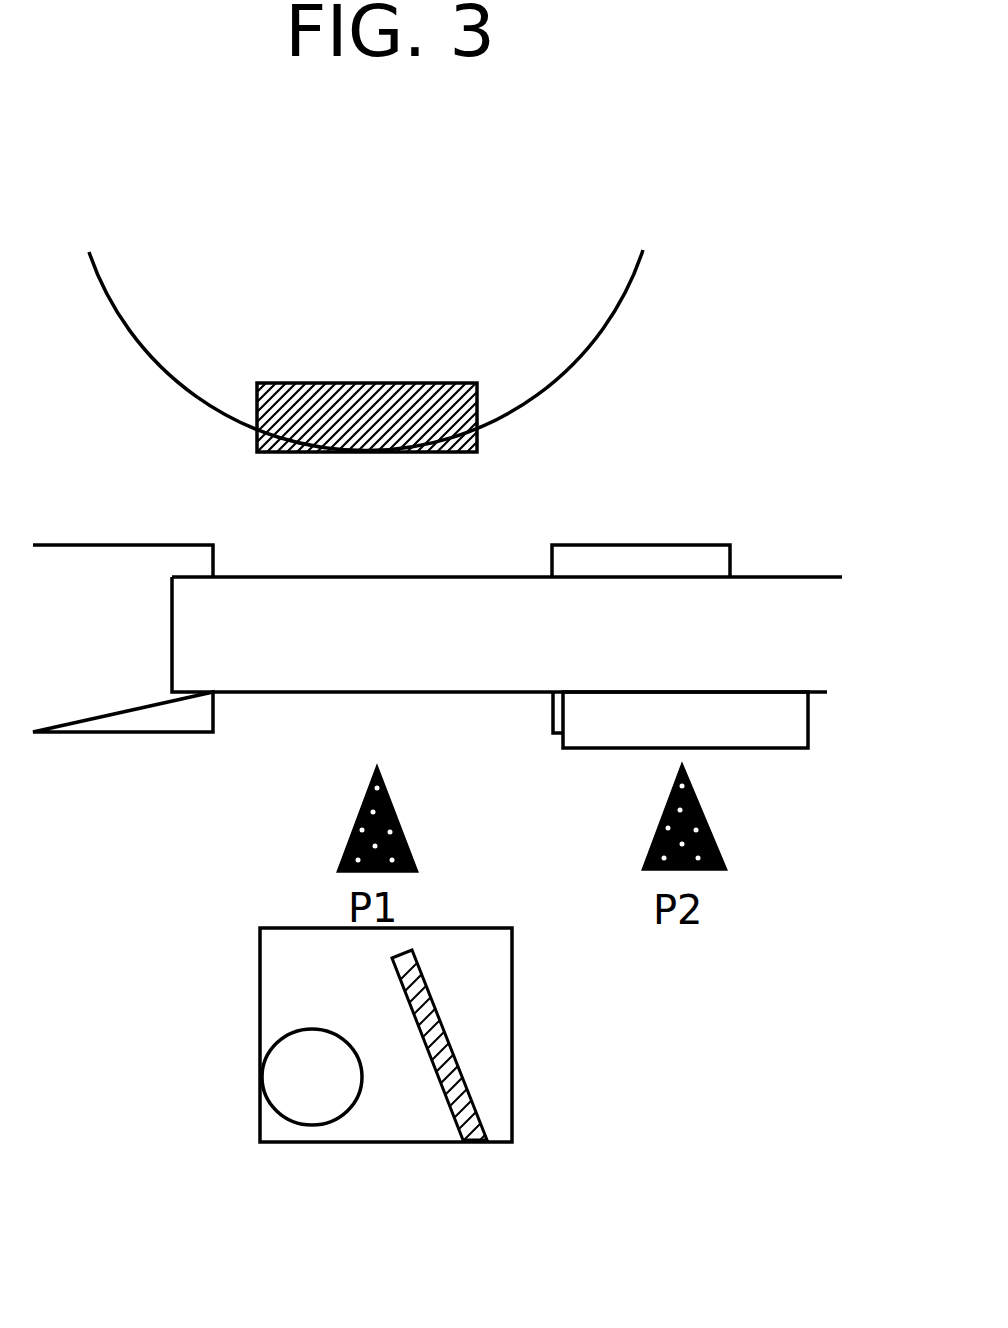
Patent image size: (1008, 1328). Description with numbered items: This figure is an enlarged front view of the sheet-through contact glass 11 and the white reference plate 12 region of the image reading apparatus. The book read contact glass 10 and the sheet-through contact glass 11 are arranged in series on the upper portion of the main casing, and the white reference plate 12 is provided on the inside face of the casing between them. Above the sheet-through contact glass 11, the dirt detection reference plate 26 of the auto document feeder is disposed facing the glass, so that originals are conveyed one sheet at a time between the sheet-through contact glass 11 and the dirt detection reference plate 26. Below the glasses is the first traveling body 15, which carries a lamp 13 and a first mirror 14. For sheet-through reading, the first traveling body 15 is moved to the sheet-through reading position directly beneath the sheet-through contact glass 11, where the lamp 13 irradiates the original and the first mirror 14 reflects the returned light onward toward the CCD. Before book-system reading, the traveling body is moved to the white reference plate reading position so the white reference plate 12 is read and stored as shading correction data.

The book read contact glass 10 is at (822, 577).
The sheet-through contact glass 11 is at (360, 692).
The white reference plate 12 is at (785, 748).
The lamp 13 is at (283, 1085).
The first mirror 14 is at (452, 1055).
The first traveling body 15 is at (260, 980).
The dirt detection reference plate 26 is at (392, 452).